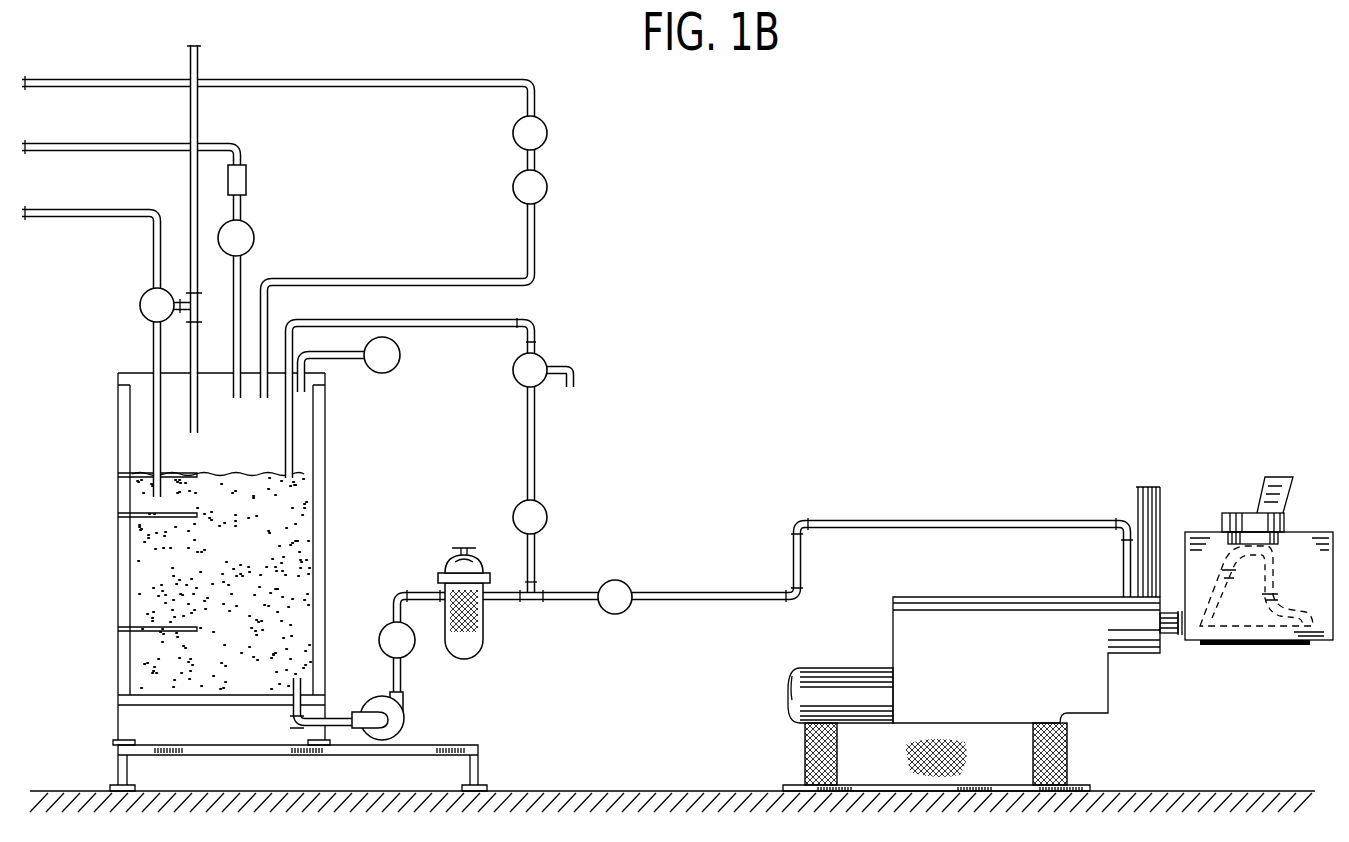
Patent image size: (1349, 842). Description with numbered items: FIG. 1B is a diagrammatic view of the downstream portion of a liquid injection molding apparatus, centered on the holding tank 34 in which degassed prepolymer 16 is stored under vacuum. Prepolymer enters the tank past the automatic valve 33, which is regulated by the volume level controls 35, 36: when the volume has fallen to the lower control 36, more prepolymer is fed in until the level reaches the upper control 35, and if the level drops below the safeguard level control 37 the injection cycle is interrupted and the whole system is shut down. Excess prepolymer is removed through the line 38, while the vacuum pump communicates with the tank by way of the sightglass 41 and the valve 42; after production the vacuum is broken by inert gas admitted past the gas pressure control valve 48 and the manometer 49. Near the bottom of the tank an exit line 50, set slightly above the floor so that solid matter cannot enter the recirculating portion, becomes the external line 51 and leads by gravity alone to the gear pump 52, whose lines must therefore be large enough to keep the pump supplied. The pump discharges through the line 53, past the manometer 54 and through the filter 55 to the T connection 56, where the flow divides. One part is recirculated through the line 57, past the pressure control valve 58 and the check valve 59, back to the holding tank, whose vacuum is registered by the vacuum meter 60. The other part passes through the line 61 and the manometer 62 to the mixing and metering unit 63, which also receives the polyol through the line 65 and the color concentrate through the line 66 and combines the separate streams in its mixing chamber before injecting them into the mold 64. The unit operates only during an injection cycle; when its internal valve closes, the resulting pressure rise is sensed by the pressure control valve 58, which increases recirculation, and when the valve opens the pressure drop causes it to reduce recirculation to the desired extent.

The prepolymer 16 is at (300, 535).
The automatic valve 33 is at (145, 297).
The holding tank 34 is at (142, 383).
The volume level control 35 is at (150, 473).
The volume level control 36 is at (148, 513).
The level control 37 is at (152, 627).
The line 38 is at (188, 177).
The sightglass 41 is at (246, 172).
The valve 42 is at (253, 232).
The gas pressure control valve 48 is at (548, 136).
The manometer 49 is at (547, 178).
The exit line 50 is at (290, 682).
The line 51 is at (331, 714).
The gear pump 52 is at (401, 718).
The line 53 is at (402, 675).
The manometer 54 is at (392, 631).
The filter 55 is at (482, 641).
The T connection 56 is at (532, 603).
The line 57 is at (537, 557).
The pressure control valve 58 is at (545, 506).
The check valve 59 is at (546, 360).
The vacuum meter 60 is at (401, 359).
The line 61 is at (585, 601).
The manometer 62 is at (636, 569).
The mixing and metering unit 63 is at (1010, 597).
The mold 64 is at (1204, 545).
The line 65 is at (1140, 493).
The line 66 is at (1160, 494).